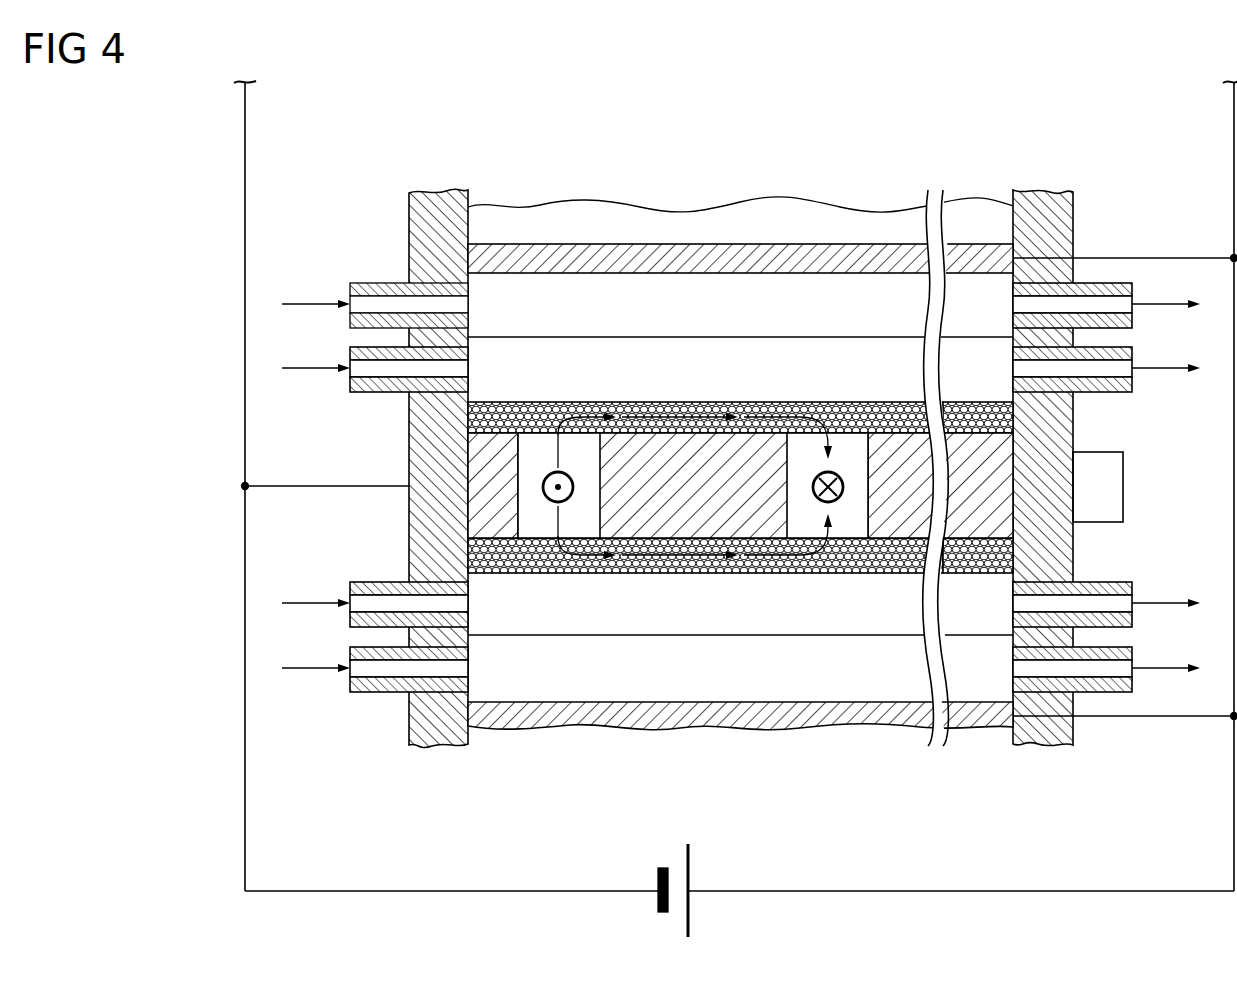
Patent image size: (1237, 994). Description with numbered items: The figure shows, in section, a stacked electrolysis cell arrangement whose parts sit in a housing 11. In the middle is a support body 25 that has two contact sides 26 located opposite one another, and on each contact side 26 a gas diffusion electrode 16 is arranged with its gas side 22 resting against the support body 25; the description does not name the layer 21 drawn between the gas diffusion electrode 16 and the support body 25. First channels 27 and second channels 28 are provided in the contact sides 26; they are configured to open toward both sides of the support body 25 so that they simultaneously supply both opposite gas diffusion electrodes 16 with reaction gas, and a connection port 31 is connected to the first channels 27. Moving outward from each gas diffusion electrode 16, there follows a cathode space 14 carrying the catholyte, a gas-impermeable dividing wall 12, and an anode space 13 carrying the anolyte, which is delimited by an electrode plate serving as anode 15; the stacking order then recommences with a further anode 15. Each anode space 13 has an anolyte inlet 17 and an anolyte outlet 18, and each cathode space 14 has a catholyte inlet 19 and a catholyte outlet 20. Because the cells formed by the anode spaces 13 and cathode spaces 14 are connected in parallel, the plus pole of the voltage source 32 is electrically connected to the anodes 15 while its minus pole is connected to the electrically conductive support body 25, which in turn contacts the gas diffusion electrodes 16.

The housing 11 is at (420, 466).
The dividing wall 12 is at (568, 337).
The anode space 13 is at (877, 297).
The cathode space 14 is at (810, 362).
The anode 15 is at (619, 257).
The gas diffusion electrode 16 is at (622, 410).
The anolyte inlet 17 is at (350, 649).
The anolyte outlet 18 is at (1132, 650).
The catholyte inlet 19 is at (350, 584).
The catholyte outlet 20 is at (1132, 585).
The porous layer 21 is at (493, 392).
The gas side 22 is at (480, 446).
The support body 25 is at (472, 507).
The contact side 26 is at (990, 430).
The first channels 27 is at (598, 487).
The second channels 28 is at (787, 487).
The connection port 31 is at (1123, 487).
The voltage source 32 is at (690, 908).